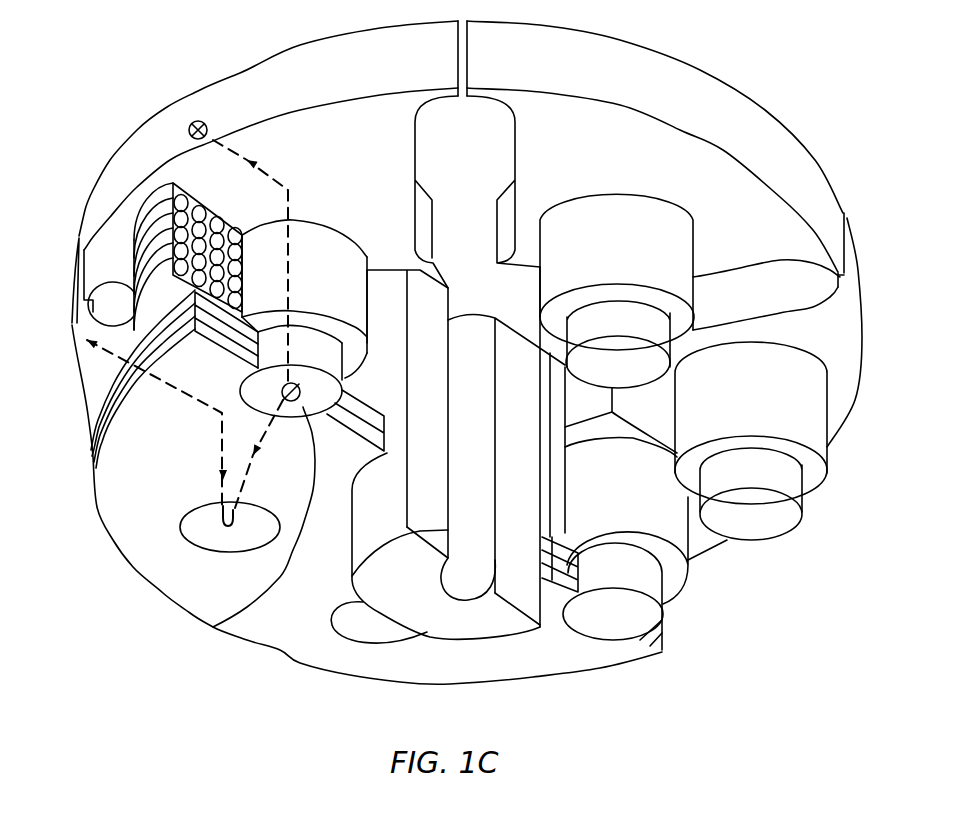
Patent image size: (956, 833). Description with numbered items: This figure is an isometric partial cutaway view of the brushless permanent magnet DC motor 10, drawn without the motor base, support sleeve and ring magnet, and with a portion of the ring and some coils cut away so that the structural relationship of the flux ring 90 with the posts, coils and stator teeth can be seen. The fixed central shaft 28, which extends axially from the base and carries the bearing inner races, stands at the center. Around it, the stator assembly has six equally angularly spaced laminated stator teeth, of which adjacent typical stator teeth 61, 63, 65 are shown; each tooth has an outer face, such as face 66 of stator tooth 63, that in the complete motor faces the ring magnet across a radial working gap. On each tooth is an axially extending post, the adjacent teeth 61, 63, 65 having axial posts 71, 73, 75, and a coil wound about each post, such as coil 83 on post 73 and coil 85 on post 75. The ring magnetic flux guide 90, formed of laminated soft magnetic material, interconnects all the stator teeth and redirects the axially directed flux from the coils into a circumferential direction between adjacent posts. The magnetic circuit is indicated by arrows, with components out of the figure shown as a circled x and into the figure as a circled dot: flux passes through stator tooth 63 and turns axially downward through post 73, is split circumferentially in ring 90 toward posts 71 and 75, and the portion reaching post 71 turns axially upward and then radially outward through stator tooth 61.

The brushless permanent magnet DC motor 10 is at (705, 56).
The face 66 is at (320, 63).
The stator tooth 63 is at (283, 128).
The stator tooth 61 is at (82, 322).
The coil 83 is at (177, 213).
The coil 85 is at (650, 203).
The stator tooth 65 is at (748, 182).
The axial post 75 is at (653, 360).
The axial post 71 is at (187, 533).
The ring magnetic flux guide 90 is at (177, 587).
The axial post 73 is at (216, 625).
The central shaft 28 is at (400, 610).